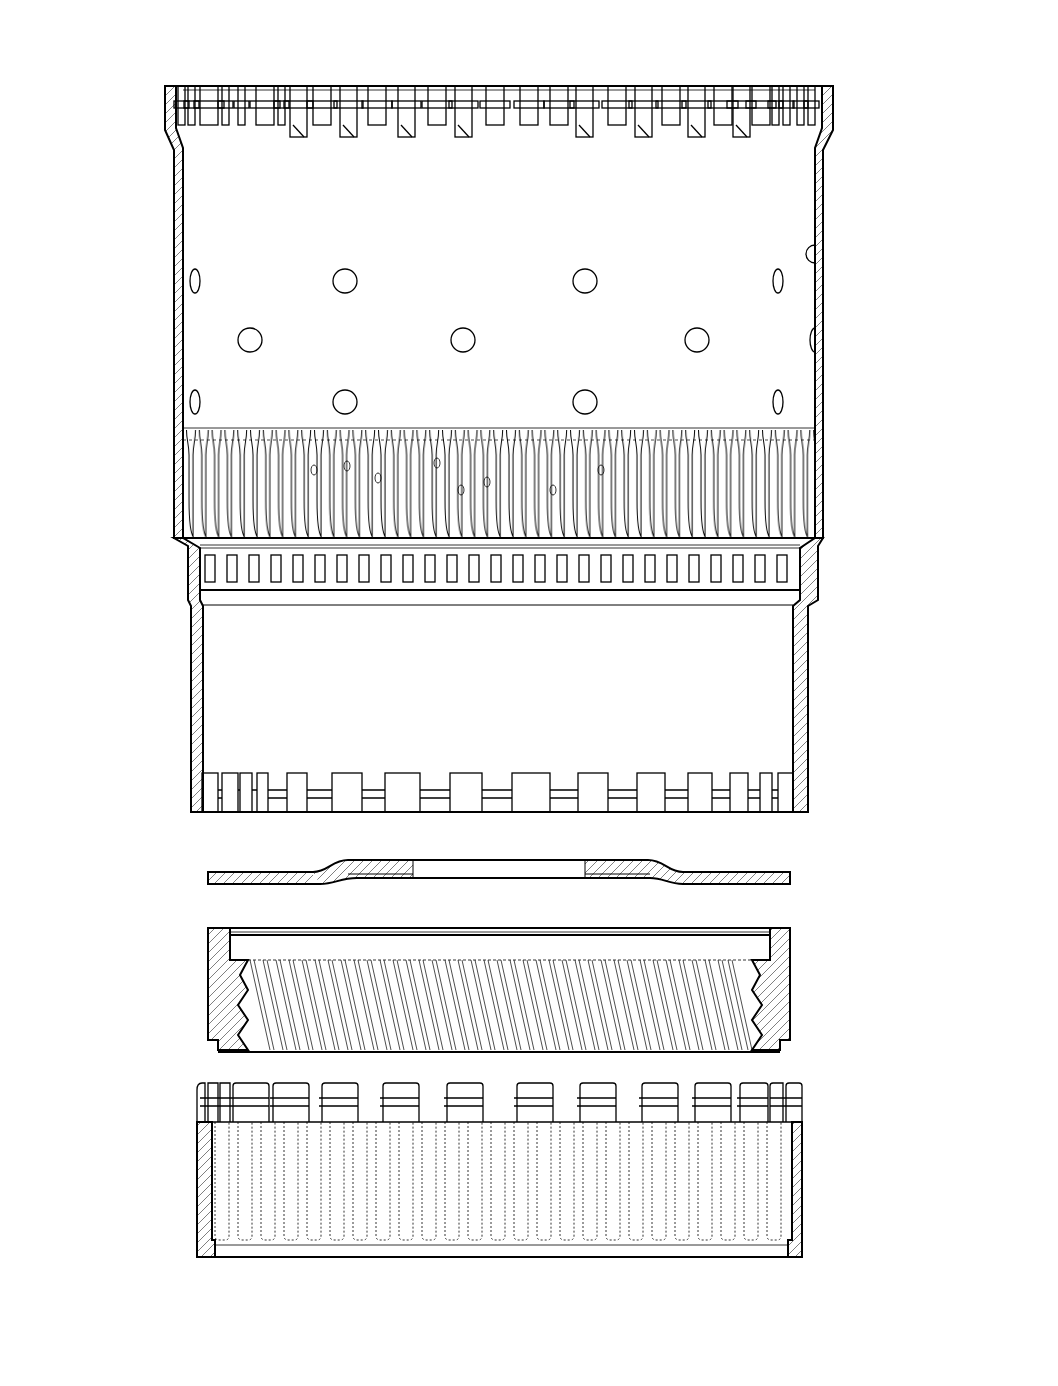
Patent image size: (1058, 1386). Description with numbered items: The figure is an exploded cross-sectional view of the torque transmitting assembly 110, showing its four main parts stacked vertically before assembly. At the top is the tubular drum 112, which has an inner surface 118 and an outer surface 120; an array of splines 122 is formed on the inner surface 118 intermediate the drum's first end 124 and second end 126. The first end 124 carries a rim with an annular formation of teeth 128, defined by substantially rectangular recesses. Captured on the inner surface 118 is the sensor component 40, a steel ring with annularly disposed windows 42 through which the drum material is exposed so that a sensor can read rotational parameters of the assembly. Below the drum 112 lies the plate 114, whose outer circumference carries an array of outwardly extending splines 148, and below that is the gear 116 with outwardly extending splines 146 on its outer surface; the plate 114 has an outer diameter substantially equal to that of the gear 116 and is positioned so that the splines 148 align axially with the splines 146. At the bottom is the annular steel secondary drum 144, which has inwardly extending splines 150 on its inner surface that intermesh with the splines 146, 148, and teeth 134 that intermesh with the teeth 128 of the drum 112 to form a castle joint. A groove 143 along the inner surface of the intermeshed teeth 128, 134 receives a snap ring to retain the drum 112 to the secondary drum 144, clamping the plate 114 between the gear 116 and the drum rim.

The torque transmitting assembly 110 is at (146, 50).
The drum 112 is at (834, 229).
The plate 114 is at (792, 878).
The gear 116 is at (734, 1003).
The inner surface 118 is at (818, 264).
The outer surface 120 is at (824, 298).
The splines 122 is at (232, 494).
The first end 124 is at (808, 812).
The second end 126 is at (816, 100).
The teeth 128 is at (495, 792).
The teeth 134 is at (245, 1083).
The groove 143 is at (320, 773).
The secondary drum 144 is at (198, 1196).
The splines 146 is at (792, 960).
The splines 148 is at (205, 880).
The splines 150 is at (733, 1165).
The sensor component 40 is at (293, 588).
The windows 42 is at (356, 572).